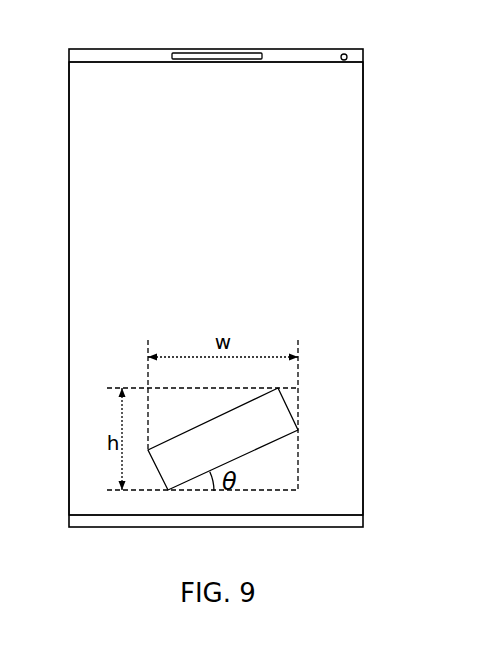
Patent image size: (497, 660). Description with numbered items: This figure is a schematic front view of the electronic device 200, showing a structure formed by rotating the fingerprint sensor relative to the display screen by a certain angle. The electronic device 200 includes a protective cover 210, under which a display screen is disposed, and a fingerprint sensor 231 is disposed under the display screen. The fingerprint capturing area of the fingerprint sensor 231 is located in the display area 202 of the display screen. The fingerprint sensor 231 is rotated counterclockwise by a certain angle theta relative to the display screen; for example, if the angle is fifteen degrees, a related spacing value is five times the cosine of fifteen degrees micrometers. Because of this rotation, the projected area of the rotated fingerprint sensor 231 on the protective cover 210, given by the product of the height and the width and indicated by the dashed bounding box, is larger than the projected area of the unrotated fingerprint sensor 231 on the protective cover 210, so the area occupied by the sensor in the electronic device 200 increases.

The electronic device 200 is at (197, 19).
The protective cover 210 is at (307, 58).
The display area 202 is at (348, 358).
The fingerprint sensor 231 is at (177, 437).